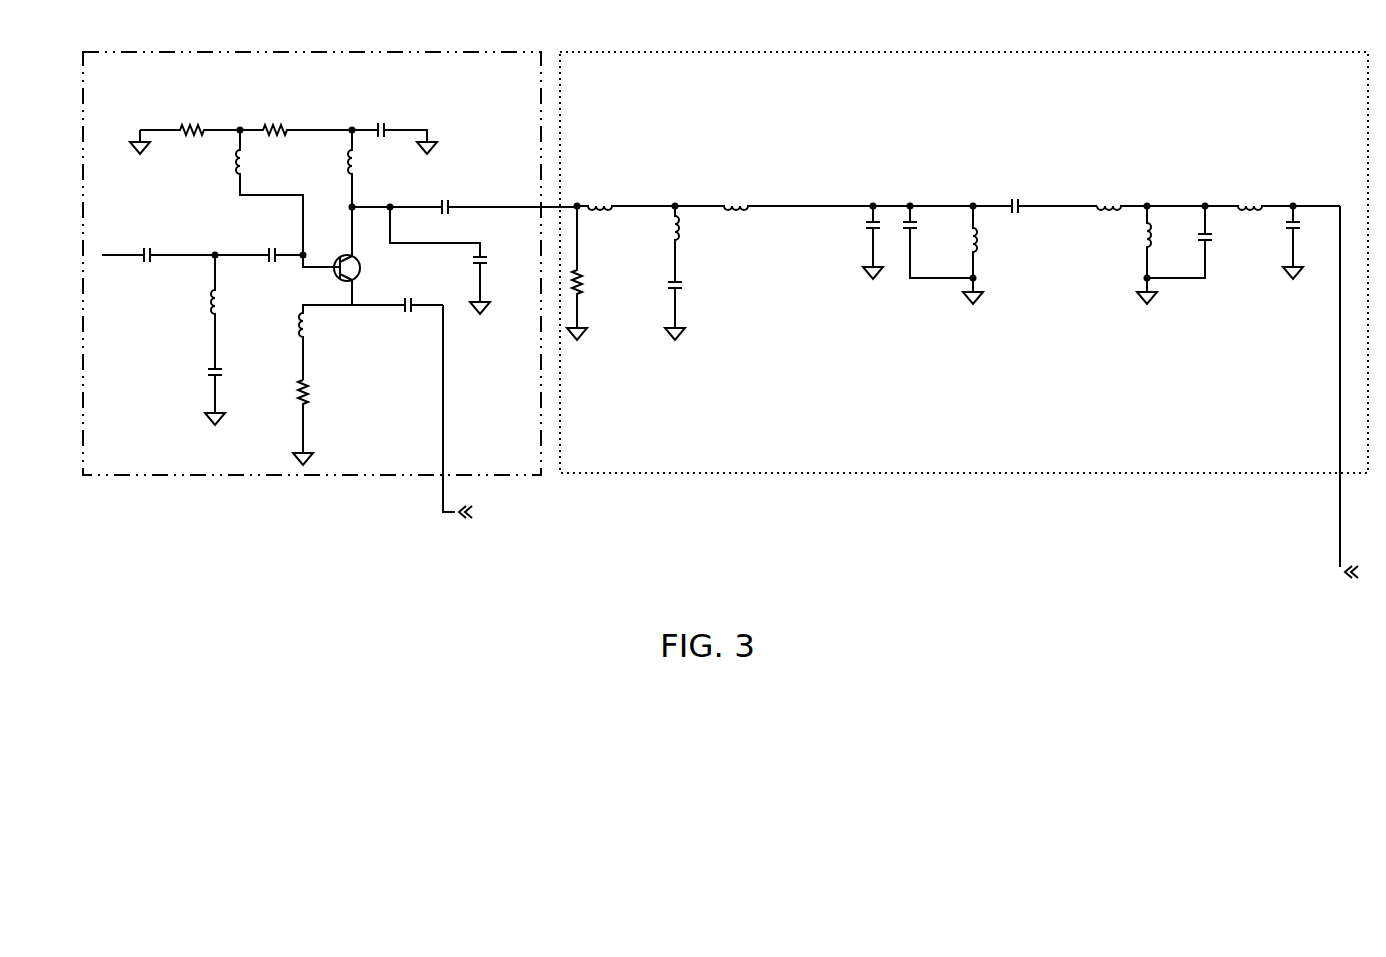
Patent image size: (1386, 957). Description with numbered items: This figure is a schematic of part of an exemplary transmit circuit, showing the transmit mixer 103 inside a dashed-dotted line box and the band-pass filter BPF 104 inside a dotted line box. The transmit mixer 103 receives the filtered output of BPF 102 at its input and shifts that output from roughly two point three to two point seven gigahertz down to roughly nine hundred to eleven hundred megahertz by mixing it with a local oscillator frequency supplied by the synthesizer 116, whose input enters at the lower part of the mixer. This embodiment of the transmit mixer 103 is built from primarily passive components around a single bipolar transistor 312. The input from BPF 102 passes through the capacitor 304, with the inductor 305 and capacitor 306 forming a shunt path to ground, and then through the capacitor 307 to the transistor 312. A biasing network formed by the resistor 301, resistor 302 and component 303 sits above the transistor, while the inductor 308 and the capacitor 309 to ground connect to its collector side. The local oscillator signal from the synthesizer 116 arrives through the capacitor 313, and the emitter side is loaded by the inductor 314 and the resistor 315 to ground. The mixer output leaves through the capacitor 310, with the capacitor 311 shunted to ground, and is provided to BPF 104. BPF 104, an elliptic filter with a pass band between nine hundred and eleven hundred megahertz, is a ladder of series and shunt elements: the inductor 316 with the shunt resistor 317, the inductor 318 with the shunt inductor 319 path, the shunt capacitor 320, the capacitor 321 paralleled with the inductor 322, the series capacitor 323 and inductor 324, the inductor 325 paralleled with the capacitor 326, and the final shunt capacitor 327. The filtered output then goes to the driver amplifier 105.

The transmit mixer 103 is at (312, 239).
The transmit band-pass filter 104 is at (964, 238).
The transmit band-pass filter 102 is at (119, 305).
The driver amplifier 105 is at (1285, 412).
The synthesizer 116 is at (553, 448).
The resistor 301 is at (187, 124).
The resistor 302 is at (298, 114).
The resistor 303 is at (251, 194).
The capacitor 304 is at (158, 241).
The inductor 305 is at (193, 312).
The capacitor 306 is at (194, 393).
The capacitor 307 is at (258, 241).
The inductor 308 is at (331, 170).
The capacitor 309 is at (394, 124).
The capacitor 310 is at (464, 191).
The capacitor 311 is at (440, 260).
The transistor 312 is at (351, 256).
The capacitor 313 is at (397, 323).
The inductor 314 is at (308, 342).
The resistor 315 is at (321, 421).
The inductor 316 is at (625, 190).
The resistor 317 is at (596, 273).
The inductor 318 is at (773, 190).
The capacitor 319 is at (698, 273).
The capacitor 320 is at (864, 241).
The capacitor 321 is at (938, 241).
The inductor 322 is at (993, 254).
The capacitor 323 is at (1035, 190).
The inductor 324 is at (1118, 190).
The inductor 325 is at (1129, 254).
The capacitor 326 is at (1179, 241).
The capacitor 327 is at (1275, 241).